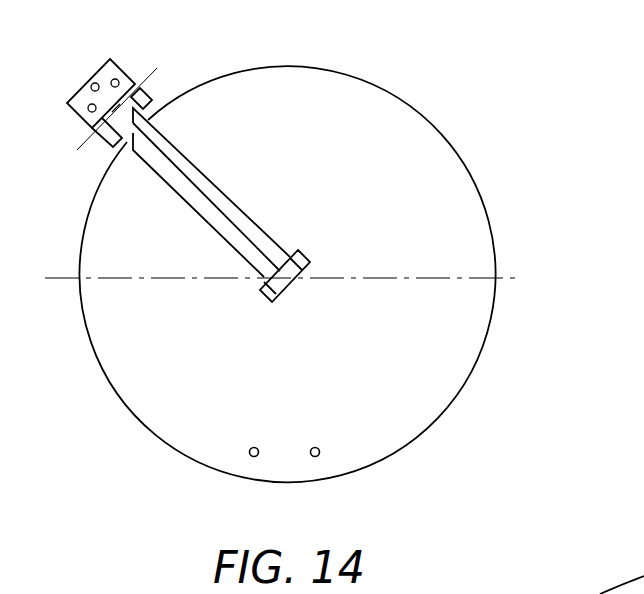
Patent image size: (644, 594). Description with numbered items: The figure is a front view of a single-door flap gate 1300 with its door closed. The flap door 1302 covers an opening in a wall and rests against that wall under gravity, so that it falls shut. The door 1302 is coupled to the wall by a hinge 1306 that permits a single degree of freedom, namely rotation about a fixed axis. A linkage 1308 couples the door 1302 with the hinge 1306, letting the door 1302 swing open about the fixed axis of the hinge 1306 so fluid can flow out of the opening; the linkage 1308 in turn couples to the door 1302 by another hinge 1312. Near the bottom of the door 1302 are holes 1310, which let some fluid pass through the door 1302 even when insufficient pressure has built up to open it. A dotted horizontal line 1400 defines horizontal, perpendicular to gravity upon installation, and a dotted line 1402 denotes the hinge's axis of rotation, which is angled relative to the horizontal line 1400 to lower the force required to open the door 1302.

The single-door flap gate 1300 is at (507, 185).
The door 1302 is at (167, 433).
The hinge 1306 is at (87, 83).
The linkage 1308 is at (187, 157).
The holes 1310 is at (311, 461).
The hinge 1312 is at (308, 252).
The horizontal line 1400 is at (507, 280).
The axis of rotation 1402 is at (150, 72).